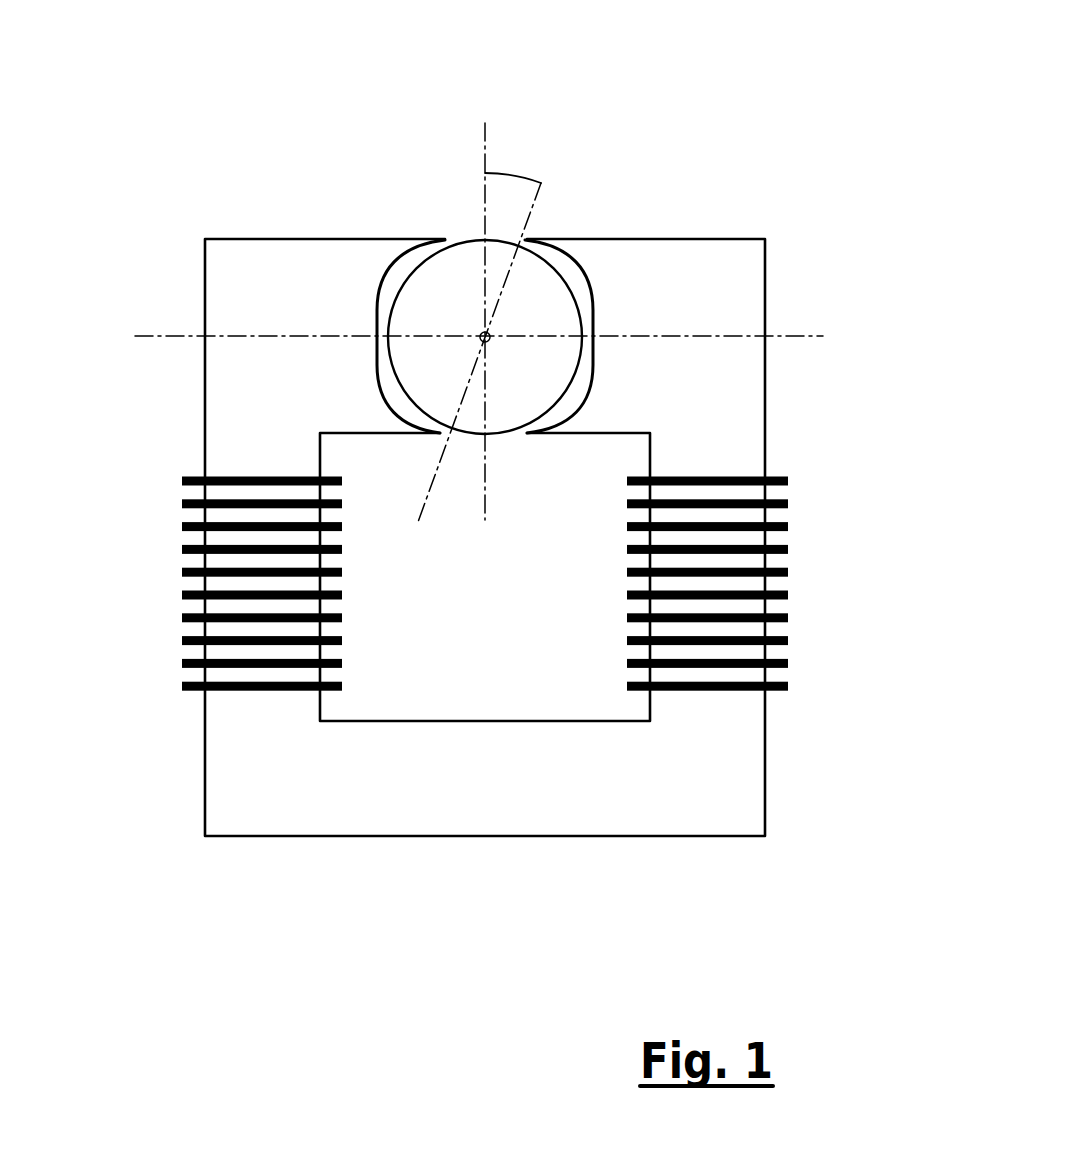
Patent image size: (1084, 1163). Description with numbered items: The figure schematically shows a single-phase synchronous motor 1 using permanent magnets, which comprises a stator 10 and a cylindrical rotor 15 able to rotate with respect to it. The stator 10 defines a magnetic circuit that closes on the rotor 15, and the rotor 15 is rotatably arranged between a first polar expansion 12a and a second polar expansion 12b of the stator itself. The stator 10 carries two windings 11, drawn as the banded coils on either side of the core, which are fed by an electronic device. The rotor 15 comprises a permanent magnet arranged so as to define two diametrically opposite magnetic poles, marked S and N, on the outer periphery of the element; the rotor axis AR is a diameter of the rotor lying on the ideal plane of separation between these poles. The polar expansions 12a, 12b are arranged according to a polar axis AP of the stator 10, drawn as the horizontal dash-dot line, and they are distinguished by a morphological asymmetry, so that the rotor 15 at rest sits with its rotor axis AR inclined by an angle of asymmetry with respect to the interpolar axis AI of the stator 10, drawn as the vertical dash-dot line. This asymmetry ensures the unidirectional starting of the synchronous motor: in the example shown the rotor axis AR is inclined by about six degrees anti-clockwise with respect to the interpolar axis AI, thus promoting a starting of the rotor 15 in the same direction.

The single-phase synchronous motor 1 is at (499, 502).
The stator 10 is at (243, 285).
The windings 11 is at (218, 522).
The first polar expansion 12a is at (373, 307).
The second polar expansion 12b is at (600, 300).
The rotor 15 is at (466, 262).
The interpolar axis AI is at (484, 212).
The rotor axis AR is at (530, 220).
The polar axis AP is at (787, 333).